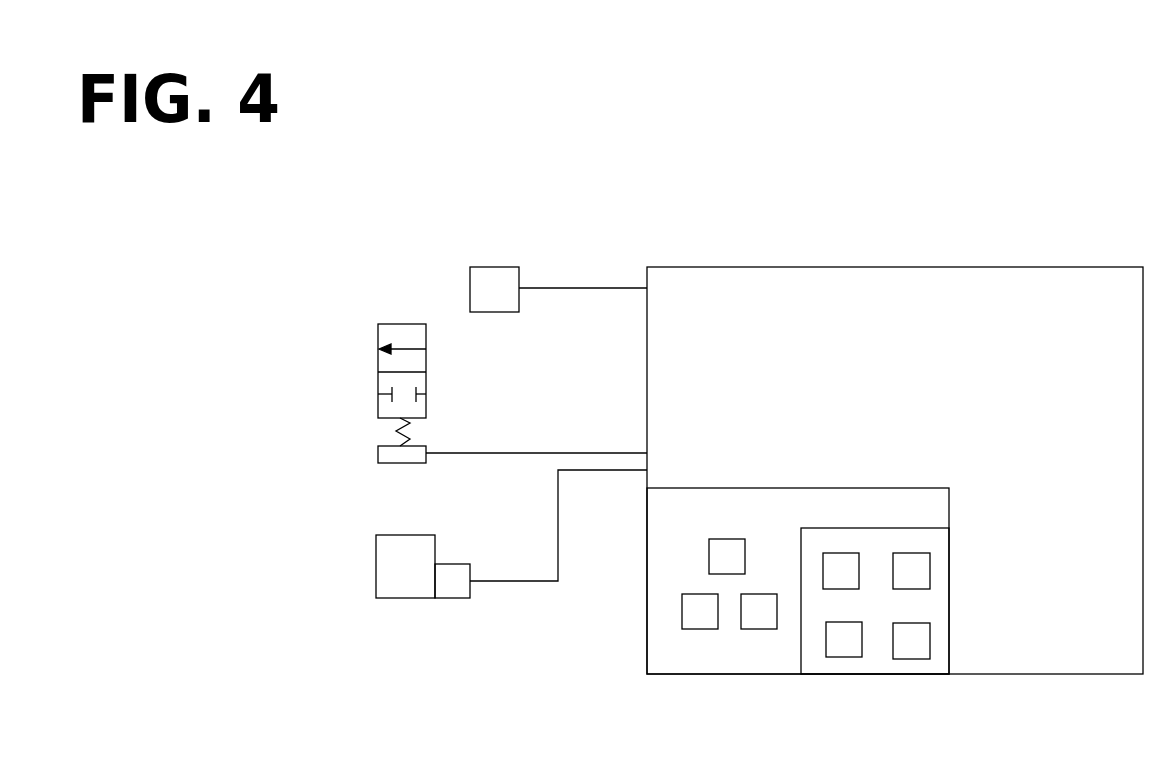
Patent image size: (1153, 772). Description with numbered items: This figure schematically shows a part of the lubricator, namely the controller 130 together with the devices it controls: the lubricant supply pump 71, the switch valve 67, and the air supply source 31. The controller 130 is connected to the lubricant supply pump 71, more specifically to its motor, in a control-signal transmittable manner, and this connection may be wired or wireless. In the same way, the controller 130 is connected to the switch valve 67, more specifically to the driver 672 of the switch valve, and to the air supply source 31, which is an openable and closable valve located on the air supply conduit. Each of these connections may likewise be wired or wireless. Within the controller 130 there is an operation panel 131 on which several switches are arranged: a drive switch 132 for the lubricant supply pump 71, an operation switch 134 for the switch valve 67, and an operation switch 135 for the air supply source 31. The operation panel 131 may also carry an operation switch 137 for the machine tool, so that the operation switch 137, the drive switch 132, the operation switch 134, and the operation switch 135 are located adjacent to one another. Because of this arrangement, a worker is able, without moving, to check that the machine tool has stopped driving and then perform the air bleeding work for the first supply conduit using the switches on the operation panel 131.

The controller 130 is at (912, 267).
The operation panel 131 is at (653, 652).
The drive switch 132 is at (699, 623).
The operation switch 134 is at (758, 620).
The operation switch 135 is at (713, 547).
The operation switch 137 is at (882, 665).
The air supply source 31 is at (500, 267).
The switch valve 67 is at (403, 324).
The driver 672 is at (378, 462).
The lubricant supply pump 71 is at (376, 557).